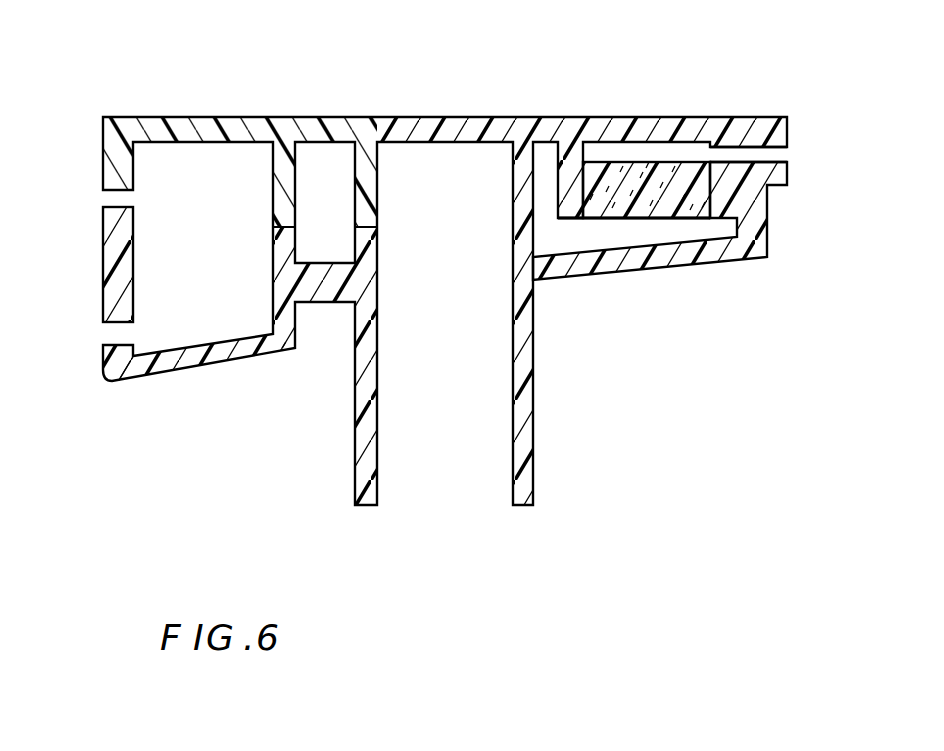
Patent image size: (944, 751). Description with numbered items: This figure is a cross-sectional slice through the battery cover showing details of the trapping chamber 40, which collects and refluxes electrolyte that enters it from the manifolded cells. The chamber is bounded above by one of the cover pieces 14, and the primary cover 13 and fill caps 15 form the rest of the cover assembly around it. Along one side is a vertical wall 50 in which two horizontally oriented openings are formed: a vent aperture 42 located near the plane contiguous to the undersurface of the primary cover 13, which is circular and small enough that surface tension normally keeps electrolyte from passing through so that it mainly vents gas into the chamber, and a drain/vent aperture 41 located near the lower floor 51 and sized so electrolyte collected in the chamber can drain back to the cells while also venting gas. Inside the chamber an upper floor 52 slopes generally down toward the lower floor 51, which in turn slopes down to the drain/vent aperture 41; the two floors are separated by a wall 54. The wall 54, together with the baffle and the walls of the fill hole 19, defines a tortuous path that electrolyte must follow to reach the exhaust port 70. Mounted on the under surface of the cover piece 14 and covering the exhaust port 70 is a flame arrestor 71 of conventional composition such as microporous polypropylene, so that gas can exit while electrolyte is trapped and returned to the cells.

The trapping chamber 40 is at (212, 86).
The fill caps 15 is at (447, 122).
The vent aperture 42 is at (103, 192).
The vertical wall 50 is at (103, 263).
The drain/vent aperture 41 is at (112, 332).
The lower floor 51 is at (193, 337).
The wall 54 is at (281, 298).
The upper floor 52 is at (333, 251).
The fill hole 19 is at (482, 487).
The cover pieces 14 is at (643, 123).
The flame arrestor 71 is at (665, 180).
The exhaust port 70 is at (783, 153).
The primary cover 13 is at (650, 258).